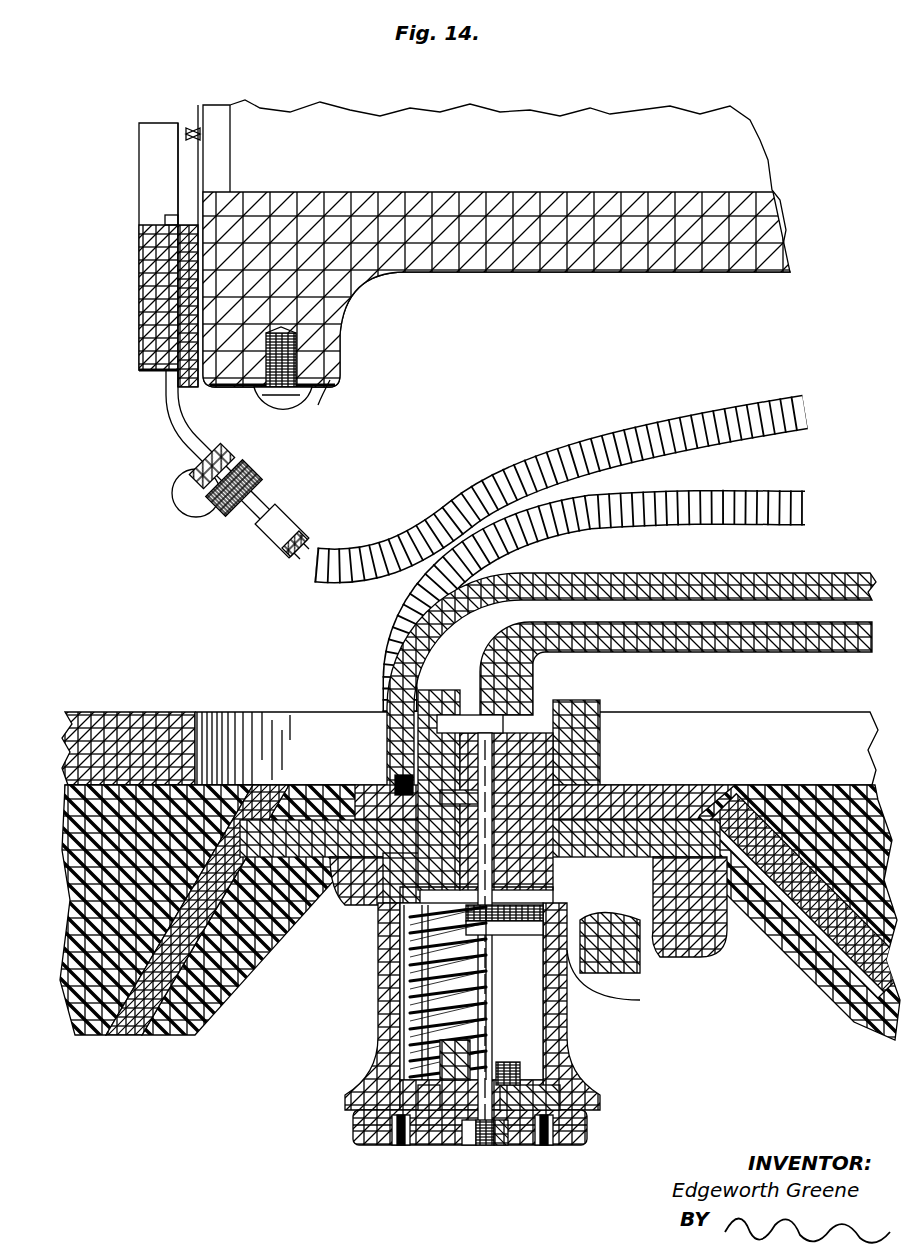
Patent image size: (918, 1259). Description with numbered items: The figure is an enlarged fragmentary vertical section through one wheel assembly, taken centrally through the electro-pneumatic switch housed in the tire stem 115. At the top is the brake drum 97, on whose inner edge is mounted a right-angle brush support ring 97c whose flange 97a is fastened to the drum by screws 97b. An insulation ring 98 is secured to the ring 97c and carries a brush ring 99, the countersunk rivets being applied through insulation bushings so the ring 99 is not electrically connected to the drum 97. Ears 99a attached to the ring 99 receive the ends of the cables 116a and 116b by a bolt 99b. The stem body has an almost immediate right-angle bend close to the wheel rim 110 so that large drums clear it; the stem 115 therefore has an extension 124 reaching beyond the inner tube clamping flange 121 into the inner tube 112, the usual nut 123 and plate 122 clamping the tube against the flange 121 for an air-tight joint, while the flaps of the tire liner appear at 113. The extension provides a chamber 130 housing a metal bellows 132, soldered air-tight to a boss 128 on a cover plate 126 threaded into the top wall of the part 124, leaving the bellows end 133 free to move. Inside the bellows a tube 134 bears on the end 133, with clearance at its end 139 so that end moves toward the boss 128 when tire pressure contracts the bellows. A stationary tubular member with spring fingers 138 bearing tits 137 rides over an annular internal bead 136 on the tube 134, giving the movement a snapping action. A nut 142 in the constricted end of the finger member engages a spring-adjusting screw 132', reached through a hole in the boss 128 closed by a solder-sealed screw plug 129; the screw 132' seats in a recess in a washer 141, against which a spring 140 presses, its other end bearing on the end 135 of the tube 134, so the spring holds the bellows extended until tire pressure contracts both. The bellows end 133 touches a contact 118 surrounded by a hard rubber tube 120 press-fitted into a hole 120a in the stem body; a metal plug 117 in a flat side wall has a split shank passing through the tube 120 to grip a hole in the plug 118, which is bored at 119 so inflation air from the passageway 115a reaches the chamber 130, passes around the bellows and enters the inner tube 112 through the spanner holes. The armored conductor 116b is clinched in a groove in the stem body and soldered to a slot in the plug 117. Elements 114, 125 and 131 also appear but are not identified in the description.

The brake drum 97 is at (452, 270).
The flange 97a is at (322, 386).
The screws 97b is at (306, 400).
The brush support ring 97c is at (198, 170).
The insulation ring 98 is at (187, 253).
The brush ring 99 is at (142, 292).
The ears 99a is at (170, 410).
The bolt 99b is at (186, 492).
The wheel rim 110 is at (130, 704).
The inner tube 112 is at (132, 1028).
The flaps of the tire liner 113 is at (324, 792).
The plate 114 is at (686, 720).
The tire stem 115 is at (648, 642).
The passageway 115a is at (792, 607).
The armored conductor 116a is at (748, 428).
The armored conductor 116b is at (778, 506).
The metal plug 117 is at (400, 805).
The contact 118 is at (500, 752).
The hole 119 is at (490, 766).
The hard rubber tube 120 is at (520, 786).
The hole 120a is at (522, 745).
The inner tube clamping flange 121 is at (627, 975).
The plate 122 is at (635, 950).
The nut 123 is at (365, 990).
The extension 124 is at (568, 1036).
The flange 125 is at (572, 1115).
The cover plate 126 is at (380, 1146).
The boss 128 is at (562, 1098).
The screw plug 129 is at (483, 1148).
The chamber 130 is at (400, 1106).
The stem 131 is at (494, 1058).
The metal bellows 132 is at (568, 1076).
The spring-adjusting screw 132' is at (510, 1171).
The bellows end 133 is at (482, 912).
The tube 134 is at (420, 985).
The tube end 135 is at (472, 982).
The annular internal bead 136 is at (468, 1002).
The tits 137 is at (430, 1040).
The spring fingers 138 is at (425, 1050).
The tube end 139 is at (427, 1148).
The spring 140 is at (470, 1022).
The washer 141 is at (508, 1046).
The nut 142 is at (468, 1148).